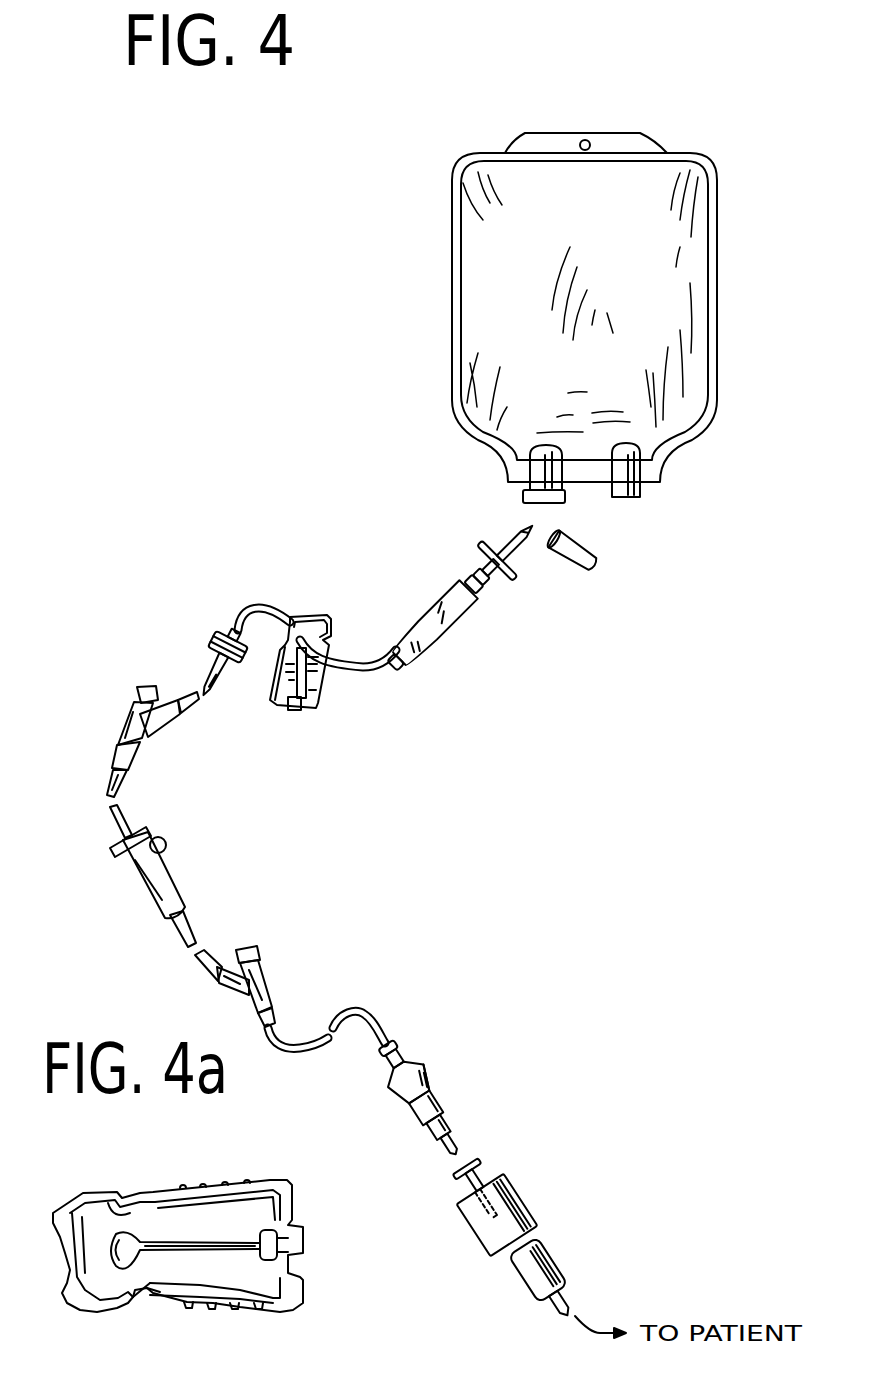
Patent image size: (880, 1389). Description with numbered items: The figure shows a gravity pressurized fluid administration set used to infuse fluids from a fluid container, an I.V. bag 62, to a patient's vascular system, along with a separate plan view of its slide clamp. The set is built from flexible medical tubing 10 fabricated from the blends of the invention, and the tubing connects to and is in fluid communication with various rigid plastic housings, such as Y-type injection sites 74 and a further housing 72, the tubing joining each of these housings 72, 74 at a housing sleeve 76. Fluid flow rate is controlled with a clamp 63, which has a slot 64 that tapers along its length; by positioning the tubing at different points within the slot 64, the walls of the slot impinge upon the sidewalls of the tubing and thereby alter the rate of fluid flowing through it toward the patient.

In FIG. 4, the medical tubing 10 is at (340, 667).
In FIG. 4, the I.V. bag 62 is at (452, 253).
In FIG. 4, the clamp 63 is at (316, 609).
In FIG. 4A, the clamp 63 is at (101, 1180).
In FIG. 4A, the slot 64 is at (138, 1250).
In FIG. 4, the housing 72 is at (494, 610).
In FIG. 4, the Y-type injection site 74 is at (122, 705).
In FIG. 4, the housing sleeve 76 is at (463, 582).